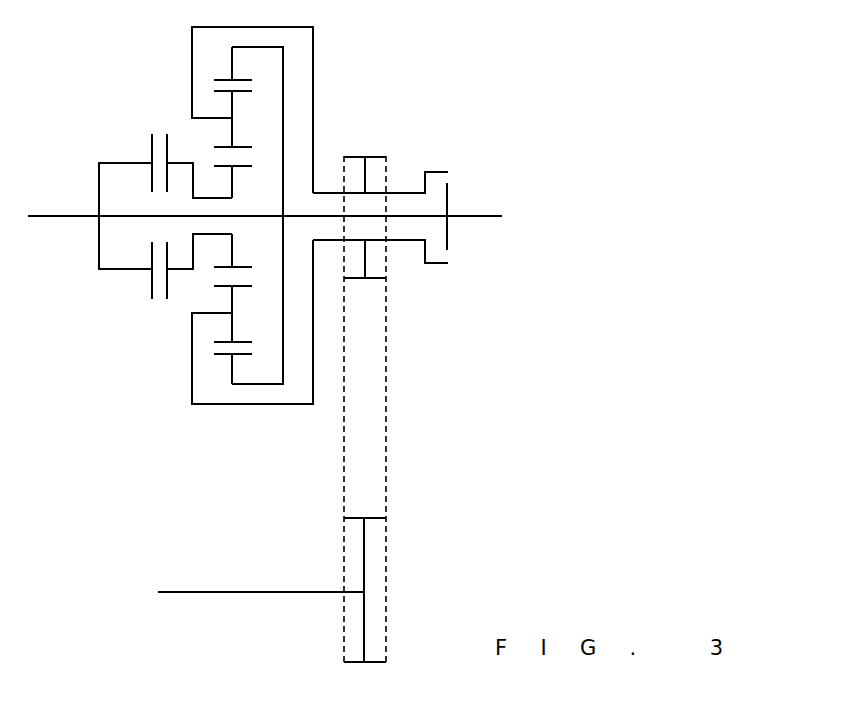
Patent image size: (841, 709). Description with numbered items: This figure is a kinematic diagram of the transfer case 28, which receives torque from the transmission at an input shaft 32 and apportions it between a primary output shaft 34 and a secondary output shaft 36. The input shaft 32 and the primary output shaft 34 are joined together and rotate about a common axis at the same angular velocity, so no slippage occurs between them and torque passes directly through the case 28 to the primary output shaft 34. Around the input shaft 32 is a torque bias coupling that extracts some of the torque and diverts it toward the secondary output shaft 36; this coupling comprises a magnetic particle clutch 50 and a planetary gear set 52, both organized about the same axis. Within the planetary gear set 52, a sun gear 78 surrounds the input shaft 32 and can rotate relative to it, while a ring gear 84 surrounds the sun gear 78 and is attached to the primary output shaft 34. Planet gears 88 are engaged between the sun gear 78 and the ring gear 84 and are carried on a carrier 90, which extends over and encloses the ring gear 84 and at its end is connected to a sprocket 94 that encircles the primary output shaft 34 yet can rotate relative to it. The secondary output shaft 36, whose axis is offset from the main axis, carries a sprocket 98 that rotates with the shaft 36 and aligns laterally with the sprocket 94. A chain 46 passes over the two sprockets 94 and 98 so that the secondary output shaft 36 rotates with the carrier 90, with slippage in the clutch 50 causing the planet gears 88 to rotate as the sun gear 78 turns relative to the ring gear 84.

The transfer case 28 is at (452, 348).
The input shaft 32 is at (52, 216).
The primary output shaft 34 is at (478, 217).
The secondary output shaft 36 is at (260, 592).
The chain 46 is at (387, 427).
The magnetic particle clutch 50 is at (138, 148).
The planetary gear set 52 is at (338, 107).
The sun gear 78 is at (232, 299).
The ring gear 84 is at (232, 355).
The planet gears 88 is at (232, 135).
The carrier 90 is at (315, 63).
The sprocket 94 is at (380, 192).
The sprocket 98 is at (364, 662).